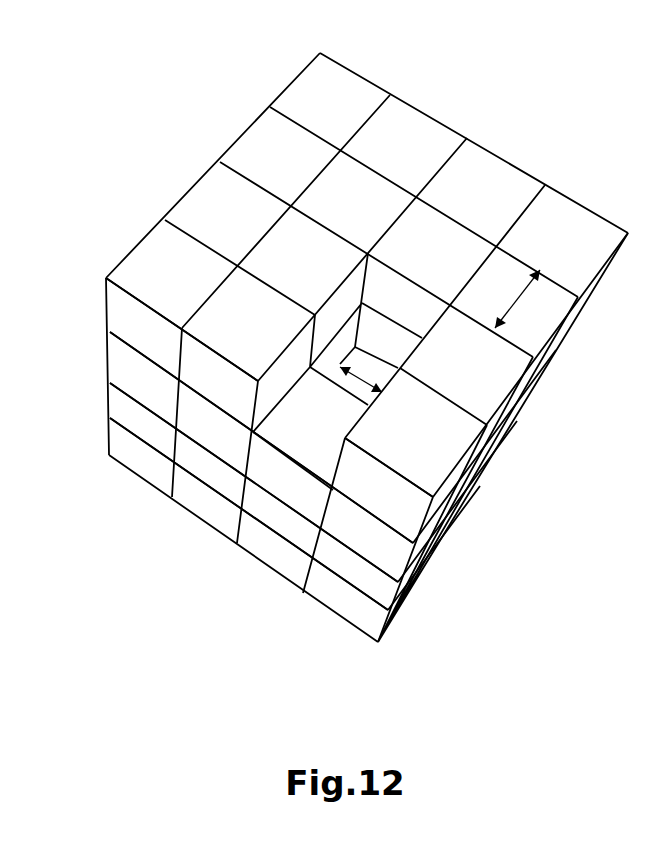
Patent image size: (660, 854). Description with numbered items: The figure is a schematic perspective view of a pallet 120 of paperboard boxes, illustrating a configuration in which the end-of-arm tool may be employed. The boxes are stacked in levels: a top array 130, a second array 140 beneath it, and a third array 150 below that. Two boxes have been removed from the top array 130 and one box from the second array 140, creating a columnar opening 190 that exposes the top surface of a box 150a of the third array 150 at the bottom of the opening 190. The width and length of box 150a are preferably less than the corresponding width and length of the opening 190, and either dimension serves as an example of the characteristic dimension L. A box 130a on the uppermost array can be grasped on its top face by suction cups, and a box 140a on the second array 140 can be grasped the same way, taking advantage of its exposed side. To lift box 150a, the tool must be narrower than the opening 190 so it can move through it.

The pallet 120 is at (140, 113).
The top array of boxes 130 is at (102, 328).
The second array 140 is at (102, 378).
The third array 150 is at (102, 418).
The box 130a is at (555, 305).
The box 140a is at (298, 492).
The box 150a is at (353, 380).
The opening 190 is at (394, 294).